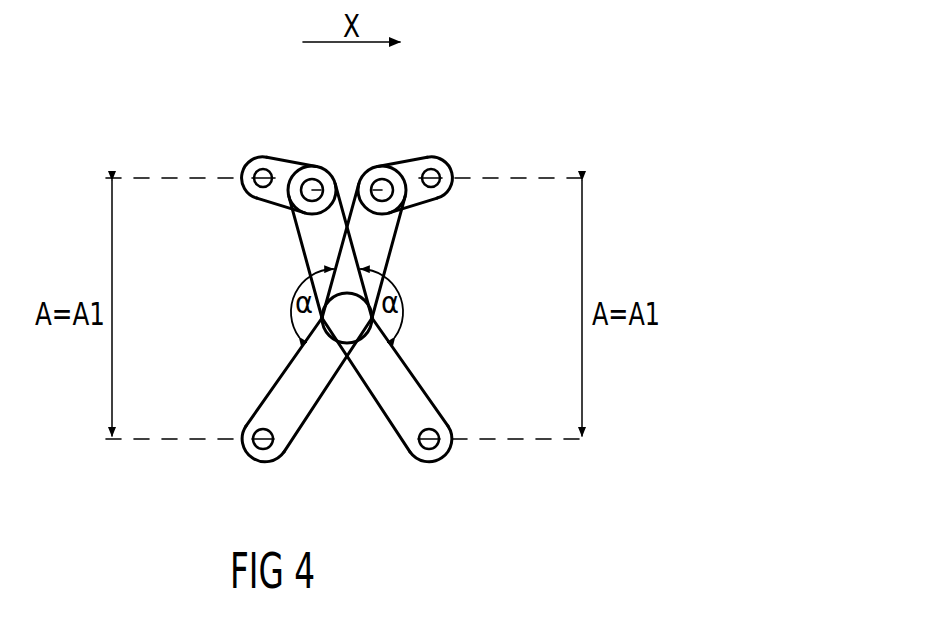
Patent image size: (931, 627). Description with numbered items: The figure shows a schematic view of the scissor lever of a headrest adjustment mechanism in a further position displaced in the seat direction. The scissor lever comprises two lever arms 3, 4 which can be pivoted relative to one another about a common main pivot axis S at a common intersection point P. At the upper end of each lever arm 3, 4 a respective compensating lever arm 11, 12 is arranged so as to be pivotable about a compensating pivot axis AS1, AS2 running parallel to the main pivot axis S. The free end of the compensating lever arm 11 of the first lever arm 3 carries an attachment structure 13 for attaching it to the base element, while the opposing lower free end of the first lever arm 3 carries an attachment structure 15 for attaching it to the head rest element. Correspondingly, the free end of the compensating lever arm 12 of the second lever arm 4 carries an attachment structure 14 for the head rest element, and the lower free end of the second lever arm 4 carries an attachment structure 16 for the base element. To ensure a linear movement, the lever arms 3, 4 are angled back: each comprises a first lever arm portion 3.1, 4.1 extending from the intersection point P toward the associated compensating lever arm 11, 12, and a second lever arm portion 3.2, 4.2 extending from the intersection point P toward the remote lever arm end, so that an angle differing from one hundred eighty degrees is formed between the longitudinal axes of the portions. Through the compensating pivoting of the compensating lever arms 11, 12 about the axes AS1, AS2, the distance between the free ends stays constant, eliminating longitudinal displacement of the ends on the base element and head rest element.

The first lever arm 3 is at (364, 314).
The first lever arm portion 3.1 is at (306, 236).
The second lever arm portion 3.2 is at (413, 407).
The second lever arm 4 is at (325, 314).
The first lever arm portion 4.1 is at (386, 245).
The second lever arm portion 4.2 is at (278, 372).
The compensating lever arm 11 is at (281, 157).
The compensating lever arm 12 is at (433, 156).
The attachment structure 13 is at (263, 178).
The attachment structure 14 is at (431, 178).
The attachment structure 15 is at (429, 439).
The attachment structure 16 is at (263, 439).
The compensating pivot axis AS1 is at (312, 190).
The compensating pivot axis AS2 is at (382, 190).
The main pivot axis S is at (322, 318).
The intersection point P is at (372, 318).